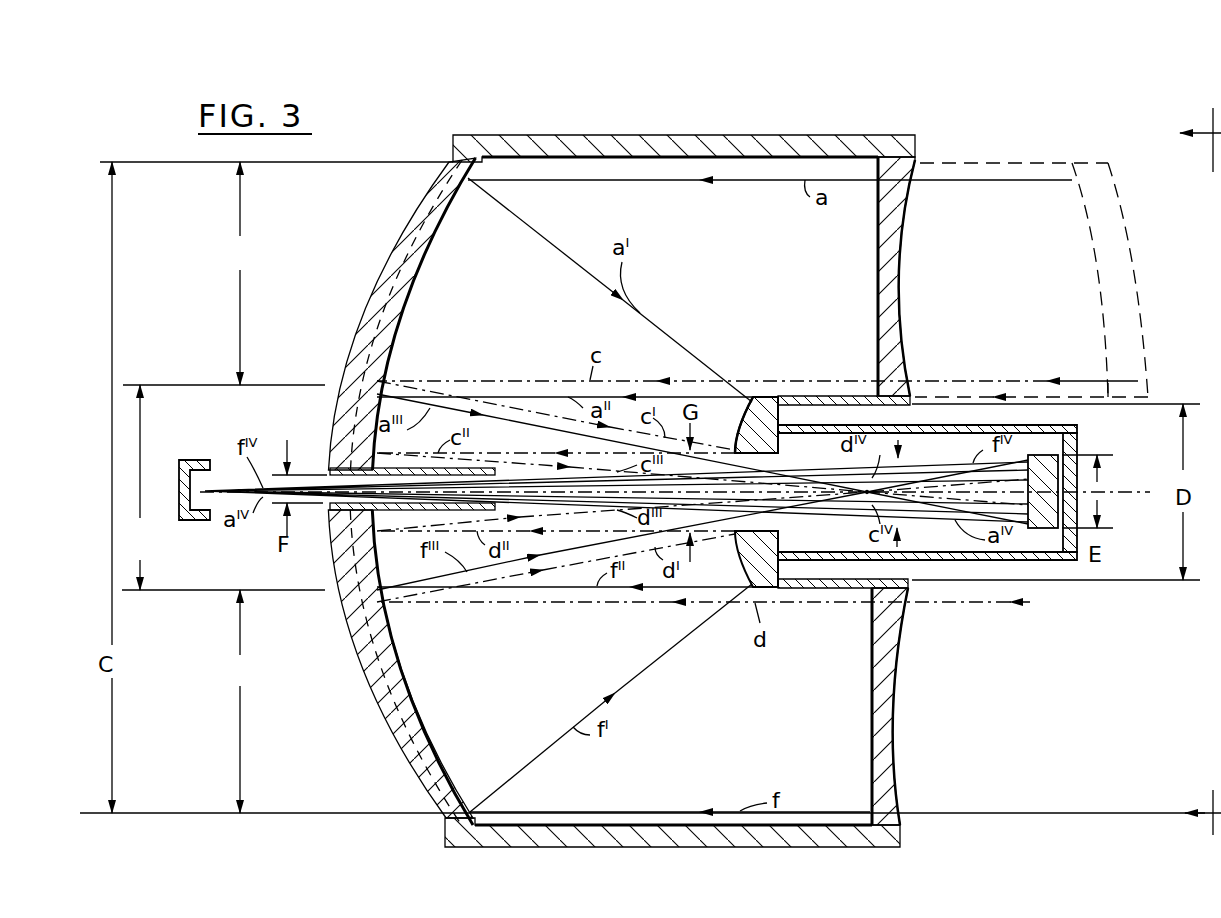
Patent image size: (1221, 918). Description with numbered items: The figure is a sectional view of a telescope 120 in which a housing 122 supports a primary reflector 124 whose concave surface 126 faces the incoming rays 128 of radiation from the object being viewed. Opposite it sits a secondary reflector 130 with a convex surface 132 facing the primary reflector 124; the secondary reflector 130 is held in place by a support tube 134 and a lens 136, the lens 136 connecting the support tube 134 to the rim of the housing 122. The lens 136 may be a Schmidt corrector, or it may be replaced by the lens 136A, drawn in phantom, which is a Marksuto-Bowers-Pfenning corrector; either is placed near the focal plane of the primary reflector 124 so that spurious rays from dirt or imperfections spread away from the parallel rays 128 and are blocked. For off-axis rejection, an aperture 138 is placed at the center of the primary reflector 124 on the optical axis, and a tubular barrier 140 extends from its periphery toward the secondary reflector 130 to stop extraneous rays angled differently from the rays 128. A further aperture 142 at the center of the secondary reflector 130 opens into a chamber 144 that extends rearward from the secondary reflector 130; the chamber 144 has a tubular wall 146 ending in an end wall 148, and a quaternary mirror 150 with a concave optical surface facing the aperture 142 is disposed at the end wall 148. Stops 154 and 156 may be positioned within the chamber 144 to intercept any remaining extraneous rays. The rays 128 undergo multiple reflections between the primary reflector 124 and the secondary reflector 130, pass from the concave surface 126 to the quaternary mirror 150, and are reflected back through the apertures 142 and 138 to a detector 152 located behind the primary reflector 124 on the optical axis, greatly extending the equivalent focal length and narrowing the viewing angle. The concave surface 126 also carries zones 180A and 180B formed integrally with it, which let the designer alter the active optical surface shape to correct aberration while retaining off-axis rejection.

The telescope 120 is at (993, 143).
The housing 122 is at (714, 136).
The primary reflector 124 is at (397, 243).
The concave surface 126 is at (418, 277).
The rays 128 is at (612, 181).
The secondary reflector 130 is at (760, 398).
The convex surface 132 is at (740, 415).
The support tube 134 is at (817, 590).
The lens 136 is at (912, 227).
The lens 136A is at (1143, 312).
The aperture 138 is at (325, 472).
The tubular barrier 140 is at (345, 548).
The aperture 142 is at (797, 518).
The chamber 144 is at (1062, 563).
The tubular wall 146 is at (935, 565).
The end wall 148 is at (1078, 428).
The quaternary mirror 150 is at (1047, 455).
The detector 152 is at (200, 462).
The stop 154 is at (790, 462).
The stop 156 is at (900, 441).
The zone 180A is at (238, 487).
The zone 180B is at (140, 487).